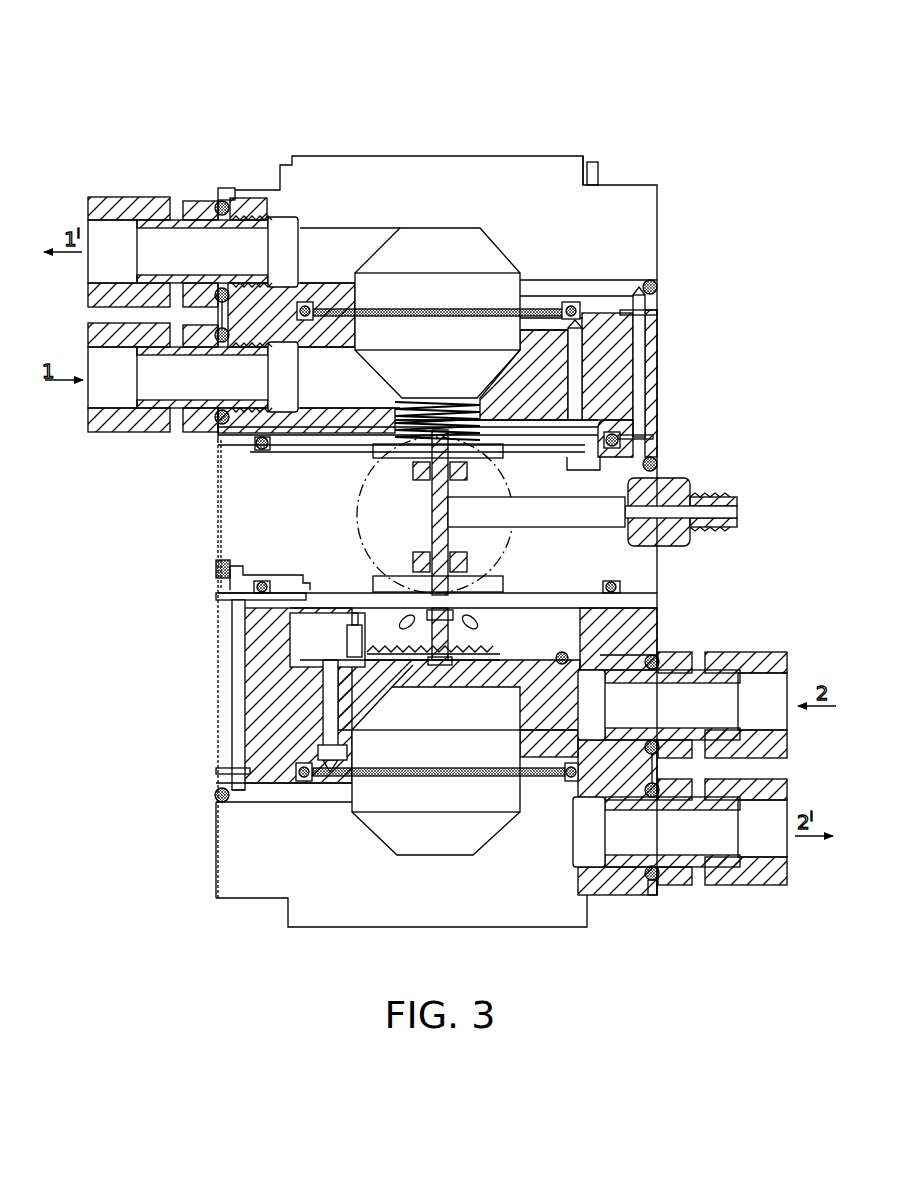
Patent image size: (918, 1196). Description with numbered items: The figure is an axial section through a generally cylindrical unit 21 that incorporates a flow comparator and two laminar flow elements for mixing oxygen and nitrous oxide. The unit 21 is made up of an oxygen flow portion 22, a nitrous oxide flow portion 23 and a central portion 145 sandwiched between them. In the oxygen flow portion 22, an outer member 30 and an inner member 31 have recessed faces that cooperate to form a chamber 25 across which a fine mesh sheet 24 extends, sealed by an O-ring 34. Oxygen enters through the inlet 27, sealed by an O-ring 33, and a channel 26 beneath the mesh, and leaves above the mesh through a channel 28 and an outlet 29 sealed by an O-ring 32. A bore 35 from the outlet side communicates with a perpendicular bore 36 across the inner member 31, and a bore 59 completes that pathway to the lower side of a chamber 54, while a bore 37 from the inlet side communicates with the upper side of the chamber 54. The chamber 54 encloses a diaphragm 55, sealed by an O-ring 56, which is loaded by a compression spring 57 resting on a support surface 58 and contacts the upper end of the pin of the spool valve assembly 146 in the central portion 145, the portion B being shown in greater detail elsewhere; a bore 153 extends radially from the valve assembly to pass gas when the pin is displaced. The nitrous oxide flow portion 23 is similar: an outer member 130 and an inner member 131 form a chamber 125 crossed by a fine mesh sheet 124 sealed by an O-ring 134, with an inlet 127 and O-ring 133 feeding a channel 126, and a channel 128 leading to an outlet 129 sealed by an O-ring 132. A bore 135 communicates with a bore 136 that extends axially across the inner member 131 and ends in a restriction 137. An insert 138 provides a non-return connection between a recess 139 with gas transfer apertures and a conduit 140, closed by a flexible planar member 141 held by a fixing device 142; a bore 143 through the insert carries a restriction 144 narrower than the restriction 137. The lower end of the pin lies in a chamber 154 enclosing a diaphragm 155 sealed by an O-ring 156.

The unit 21 is at (195, 72).
The oxygen flow portion 22 is at (740, 290).
The nitrous oxide flow portion 23 is at (115, 745).
The fine mesh sheet 24 is at (463, 305).
The chamber 25 is at (415, 235).
The channel 26 is at (310, 378).
The inlet 27 is at (105, 432).
The channel 28 is at (325, 235).
The outlet 29 is at (153, 197).
The outer member 30 is at (585, 160).
The inner member 31 is at (658, 350).
The O-ring 32 is at (225, 200).
The O-ring 33 is at (225, 342).
The O-ring 34 is at (560, 308).
The bore 35 is at (625, 290).
The perpendicular bore 36 is at (645, 331).
The bore 37 is at (590, 375).
The chamber 54 is at (610, 428).
The diaphragm 55 is at (350, 432).
The O-ring 56 is at (255, 442).
The compression spring 57 is at (460, 402).
The support surface 58 is at (428, 400).
The bore 59 is at (645, 456).
The portion B is at (520, 522).
The fine mesh sheet 124 is at (462, 780).
The chamber 125 is at (420, 855).
The channel 126 is at (520, 732).
The inlet 127 is at (755, 652).
The channel 128 is at (553, 855).
The outlet 129 is at (738, 887).
The outer member 130 is at (225, 875).
The inner member 131 is at (225, 597).
The O-ring 132 is at (648, 882).
The O-ring 133 is at (652, 800).
The O-ring 134 is at (352, 783).
The bore 135 is at (225, 802).
The bore 136 is at (275, 716).
The restriction 137 is at (222, 568).
The insert 138 is at (240, 660).
The recess 139 is at (412, 660).
The conduit 140 is at (355, 712).
The flexible planar member 141 is at (500, 672).
The fixing device 142 is at (448, 668).
The bore 143 is at (350, 635).
The restriction 144 is at (300, 618).
The central portion 145 is at (216, 527).
The spool valve assembly 146 is at (418, 500).
The bore 153 is at (657, 470).
The chamber 154 is at (617, 603).
The diaphragm 155 is at (575, 590).
The O-ring 156 is at (620, 588).